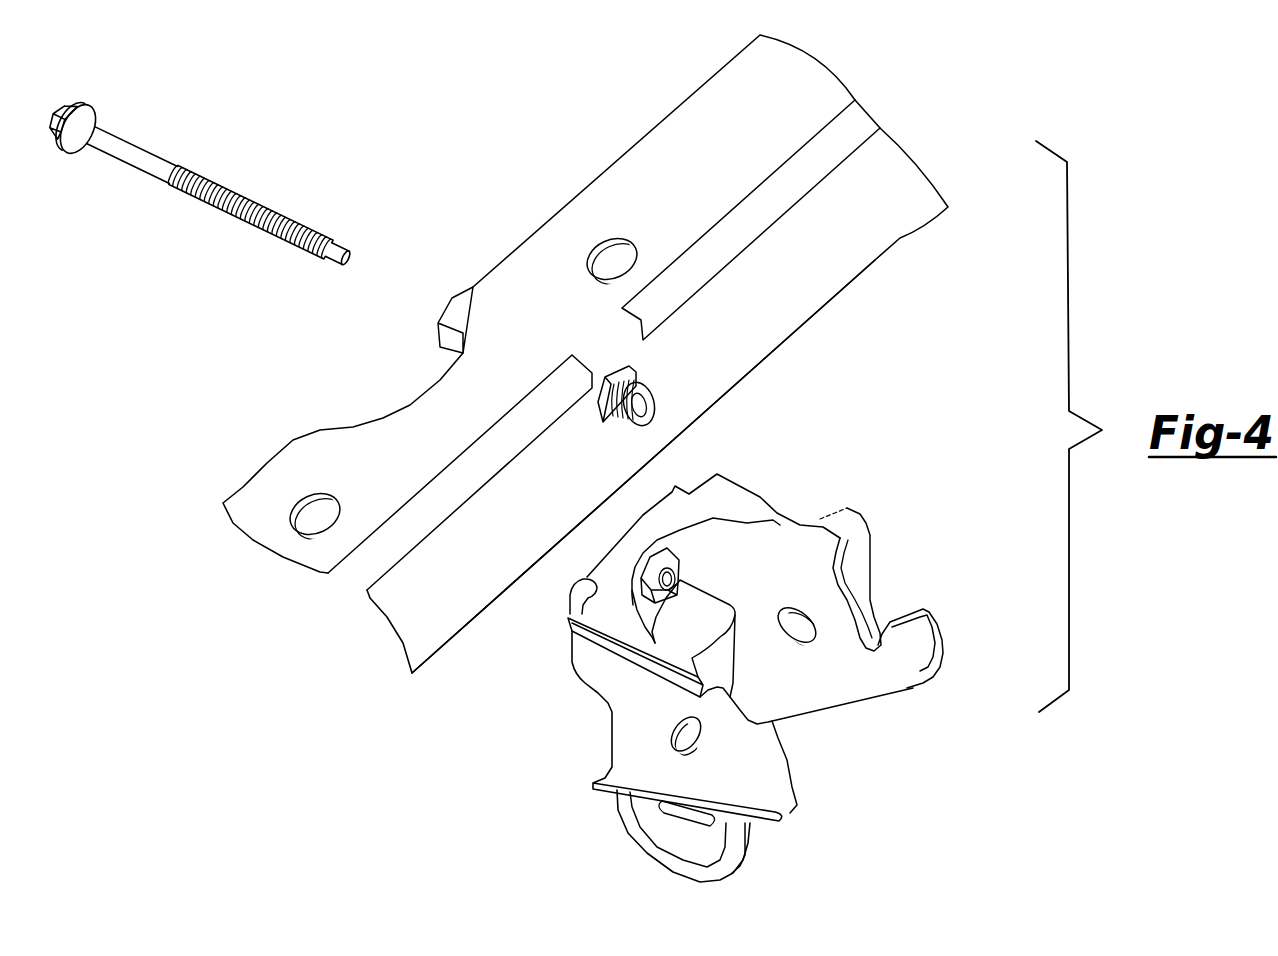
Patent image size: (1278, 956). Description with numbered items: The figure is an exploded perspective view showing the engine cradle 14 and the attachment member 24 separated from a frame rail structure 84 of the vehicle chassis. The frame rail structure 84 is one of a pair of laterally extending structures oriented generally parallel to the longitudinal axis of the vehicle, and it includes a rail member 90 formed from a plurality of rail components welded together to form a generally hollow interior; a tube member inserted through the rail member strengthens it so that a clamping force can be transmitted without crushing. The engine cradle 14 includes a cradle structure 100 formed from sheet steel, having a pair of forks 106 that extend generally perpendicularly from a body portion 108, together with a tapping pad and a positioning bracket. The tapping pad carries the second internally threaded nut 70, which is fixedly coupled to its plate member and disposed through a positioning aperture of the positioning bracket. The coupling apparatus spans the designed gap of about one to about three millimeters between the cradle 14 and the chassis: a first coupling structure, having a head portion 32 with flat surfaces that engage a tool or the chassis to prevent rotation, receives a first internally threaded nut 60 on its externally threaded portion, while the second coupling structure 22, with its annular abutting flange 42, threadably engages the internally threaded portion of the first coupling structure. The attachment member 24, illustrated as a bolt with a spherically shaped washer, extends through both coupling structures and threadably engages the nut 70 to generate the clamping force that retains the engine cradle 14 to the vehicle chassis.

The engine cradle 14 is at (953, 612).
The second coupling structure 22 is at (652, 367).
The attachment member 24 is at (222, 152).
The head portion 32 is at (603, 420).
The abutting flange 42 is at (655, 392).
The first internally threaded nut 60 is at (462, 300).
The second internally threaded nut 70 is at (680, 565).
The frame rail structure 84 is at (891, 110).
The rail member 90 is at (807, 262).
The cradle structure 100 is at (786, 518).
The forks 106 is at (867, 677).
The body portion 108 is at (567, 601).